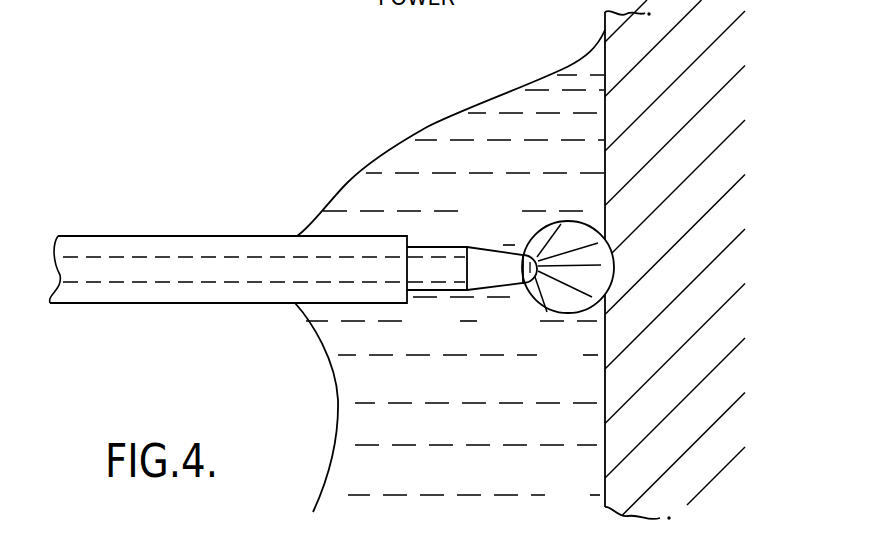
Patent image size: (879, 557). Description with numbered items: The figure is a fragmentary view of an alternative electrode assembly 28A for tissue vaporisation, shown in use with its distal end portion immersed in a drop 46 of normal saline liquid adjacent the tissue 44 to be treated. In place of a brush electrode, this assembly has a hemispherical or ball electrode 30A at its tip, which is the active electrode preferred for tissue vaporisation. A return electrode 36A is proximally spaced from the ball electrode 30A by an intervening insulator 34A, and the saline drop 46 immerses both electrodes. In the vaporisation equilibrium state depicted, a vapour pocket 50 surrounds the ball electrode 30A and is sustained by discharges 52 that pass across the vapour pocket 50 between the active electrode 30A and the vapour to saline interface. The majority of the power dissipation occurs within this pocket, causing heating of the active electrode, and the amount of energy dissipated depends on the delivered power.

The electrode assembly 28A is at (142, 236).
The drop of liquid 46 is at (425, 128).
The discharges 52 is at (556, 236).
The insulator 34A is at (488, 254).
The return electrode 36A is at (432, 292).
The ball electrode 30A is at (534, 277).
The vapour pocket 50 is at (567, 316).
The tissue 44 is at (605, 461).